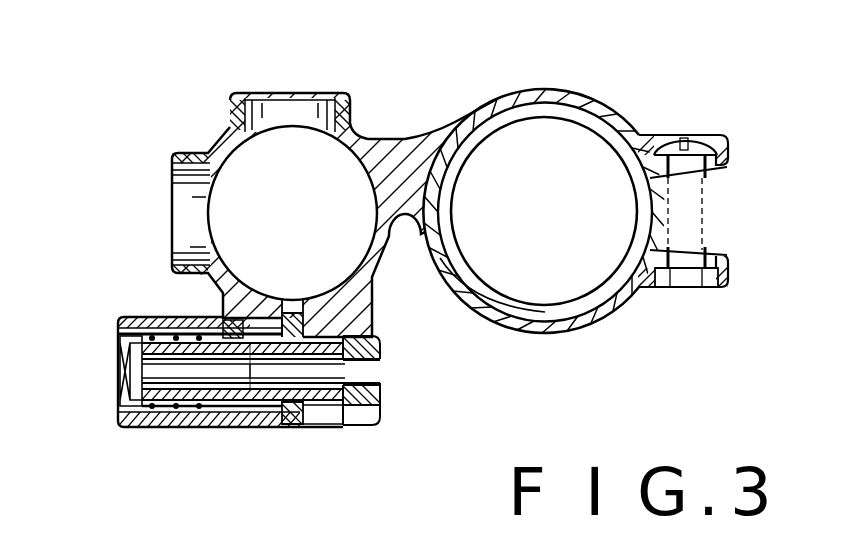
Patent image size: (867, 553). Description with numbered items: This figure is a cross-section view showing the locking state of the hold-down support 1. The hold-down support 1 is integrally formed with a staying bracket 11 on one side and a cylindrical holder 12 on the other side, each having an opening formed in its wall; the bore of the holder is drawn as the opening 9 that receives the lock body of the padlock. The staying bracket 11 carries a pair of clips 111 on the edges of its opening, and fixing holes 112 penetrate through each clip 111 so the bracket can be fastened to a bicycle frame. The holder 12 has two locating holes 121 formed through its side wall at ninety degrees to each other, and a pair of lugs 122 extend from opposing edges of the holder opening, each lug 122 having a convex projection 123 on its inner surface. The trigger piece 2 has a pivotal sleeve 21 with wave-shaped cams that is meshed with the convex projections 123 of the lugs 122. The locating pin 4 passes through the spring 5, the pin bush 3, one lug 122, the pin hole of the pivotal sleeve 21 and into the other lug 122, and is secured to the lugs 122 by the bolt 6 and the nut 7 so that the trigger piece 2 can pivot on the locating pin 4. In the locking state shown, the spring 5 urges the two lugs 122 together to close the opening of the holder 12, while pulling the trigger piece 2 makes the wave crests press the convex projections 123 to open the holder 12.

The hold-down support 1 is at (411, 137).
The trigger piece 2 is at (350, 371).
The pin bush 3 is at (145, 317).
The locating pin 4 is at (118, 317).
The spring 5 is at (182, 330).
The bolt 6 is at (120, 367).
The nut 7 is at (385, 396).
The bore 9 is at (557, 107).
The staying bracket 11 is at (617, 103).
The cylindrical holder 12 is at (222, 133).
The pivotal sleeve 21 is at (265, 418).
The clips 111 is at (723, 135).
The fixing holes 112 is at (707, 243).
The locating holes 121 is at (306, 108).
The lugs 122 is at (346, 428).
The convex projection 123 is at (322, 425).